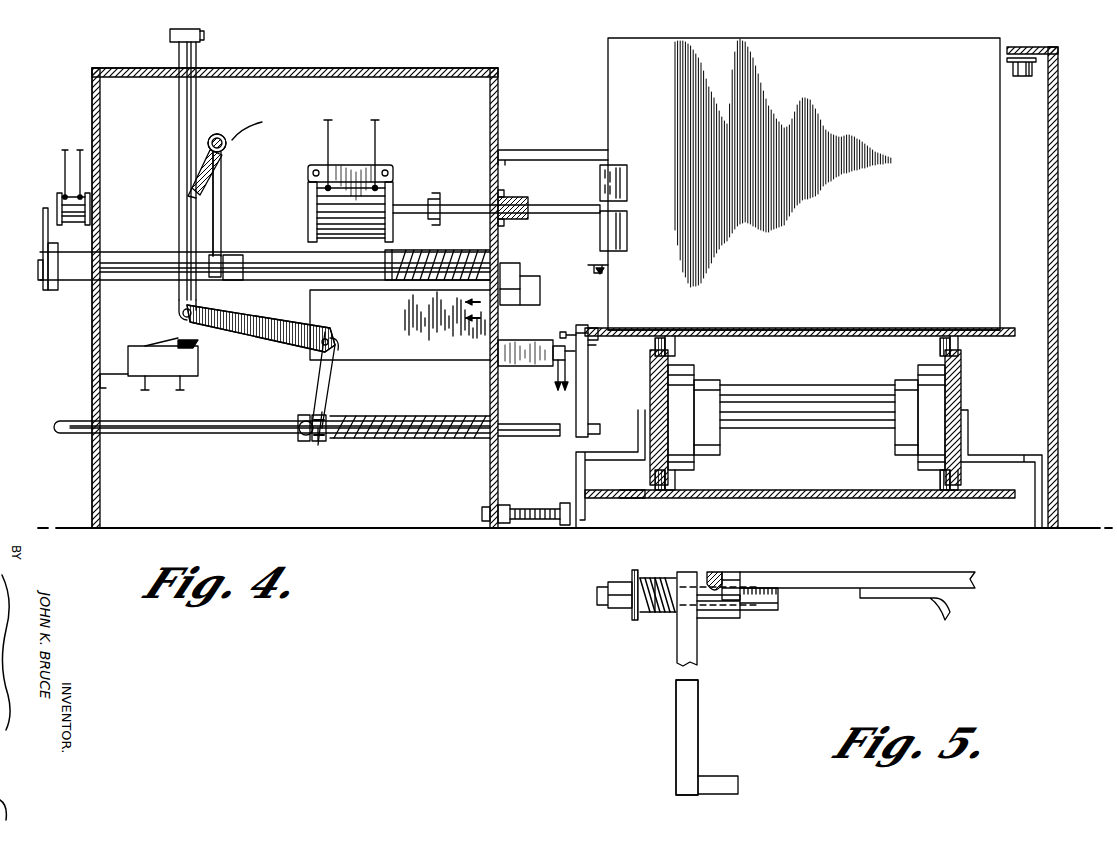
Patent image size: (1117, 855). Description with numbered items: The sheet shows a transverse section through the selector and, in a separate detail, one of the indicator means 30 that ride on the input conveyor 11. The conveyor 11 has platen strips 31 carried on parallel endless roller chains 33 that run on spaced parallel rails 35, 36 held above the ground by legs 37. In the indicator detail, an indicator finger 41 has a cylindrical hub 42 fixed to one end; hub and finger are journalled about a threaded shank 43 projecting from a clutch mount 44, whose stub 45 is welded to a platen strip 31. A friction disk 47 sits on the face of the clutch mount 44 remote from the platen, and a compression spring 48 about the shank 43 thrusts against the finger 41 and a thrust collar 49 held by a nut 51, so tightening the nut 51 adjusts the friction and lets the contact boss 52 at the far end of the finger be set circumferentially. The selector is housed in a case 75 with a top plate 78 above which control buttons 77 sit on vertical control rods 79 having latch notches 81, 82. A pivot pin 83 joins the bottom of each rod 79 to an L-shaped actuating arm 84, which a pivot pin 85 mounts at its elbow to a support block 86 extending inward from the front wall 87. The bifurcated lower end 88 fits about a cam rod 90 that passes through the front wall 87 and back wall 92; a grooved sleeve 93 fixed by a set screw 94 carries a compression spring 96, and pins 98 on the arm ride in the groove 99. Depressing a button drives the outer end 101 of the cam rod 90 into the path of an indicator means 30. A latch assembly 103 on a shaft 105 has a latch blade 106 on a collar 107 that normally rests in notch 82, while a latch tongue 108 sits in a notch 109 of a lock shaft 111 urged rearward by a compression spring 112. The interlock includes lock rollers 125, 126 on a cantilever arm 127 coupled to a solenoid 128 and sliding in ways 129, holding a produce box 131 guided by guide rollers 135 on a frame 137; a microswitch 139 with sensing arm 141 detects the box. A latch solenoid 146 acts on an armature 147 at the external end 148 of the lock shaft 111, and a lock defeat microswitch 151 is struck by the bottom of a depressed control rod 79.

In FIG. 4, the conveyor 11 is at (903, 335).
In FIG. 4, the indicator means 30 is at (588, 380).
In FIG. 5, the indicator means 30 is at (672, 706).
In FIG. 4, the platen strips 31 is at (826, 320).
In FIG. 5, the platen strips 31 is at (918, 576).
In FIG. 4, the endless roller chains 33 is at (672, 344).
In FIG. 4, the rail 35 is at (670, 454).
In FIG. 4, the rail 36 is at (965, 408).
In FIG. 4, the legs 37 is at (592, 499).
In FIG. 5, the indicator finger 41 is at (698, 704).
In FIG. 5, the cylindrical hub 42 is at (715, 622).
In FIG. 5, the threaded shank 43 is at (655, 571).
In FIG. 5, the clutch mount 44 is at (740, 623).
In FIG. 5, the stub 45 is at (775, 612).
In FIG. 5, the friction disk 47 is at (714, 573).
In FIG. 5, the compression spring 48 is at (660, 620).
In FIG. 5, the thrust collar 49 is at (630, 572).
In FIG. 5, the nut 51 is at (628, 612).
In FIG. 4, the contact boss 52 is at (594, 430).
In FIG. 5, the contact boss 52 is at (710, 776).
In FIG. 4, the case 75 is at (405, 66).
In FIG. 4, the control buttons 77 is at (203, 34).
In FIG. 4, the top plate 78 is at (345, 68).
In FIG. 4, the control rod 79 is at (195, 97).
In FIG. 4, the latch notch 81 is at (214, 132).
In FIG. 4, the latch notch 82 is at (202, 191).
In FIG. 4, the pivot pin 83 is at (181, 308).
In FIG. 4, the actuating arm 84 is at (250, 320).
In FIG. 4, the pivot pin 85 is at (345, 348).
In FIG. 4, the support block 86 is at (384, 352).
In FIG. 4, the front wall 87 is at (498, 332).
In FIG. 4, the lower end 88 is at (306, 445).
In FIG. 4, the cam rod 90 is at (205, 425).
In FIG. 4, the back wall 92 is at (92, 472).
In FIG. 4, the grooved sleeve 93 is at (318, 446).
In FIG. 4, the set screw 94 is at (328, 414).
In FIG. 4, the compression spring 96 is at (397, 440).
In FIG. 4, the pins 98 is at (308, 416).
In FIG. 4, the groove 99 is at (322, 444).
In FIG. 4, the outer end 101 is at (532, 436).
In FIG. 4, the latch assembly 103 is at (228, 175).
In FIG. 4, the shaft 105 is at (228, 134).
In FIG. 4, the latch blade 106 is at (218, 189).
In FIG. 4, the collar 107 is at (262, 122).
In FIG. 4, the latch tongue 108 is at (218, 221).
In FIG. 4, the notch 109 is at (220, 276).
In FIG. 4, the lock shaft 111 is at (360, 265).
In FIG. 4, the compression spring 112 is at (423, 253).
In FIG. 4, the lock roller 125 is at (630, 190).
In FIG. 4, the lock roller 126 is at (628, 237).
In FIG. 4, the cantilever arm 127 is at (552, 210).
In FIG. 4, the solenoid 128 is at (380, 204).
In FIG. 4, the ways 129 is at (521, 198).
In FIG. 4, the produce box 131 is at (611, 60).
In FIG. 4, the guide rollers 135 is at (1032, 74).
In FIG. 4, the frame 137 is at (1052, 124).
In FIG. 4, the microswitch 139 is at (523, 274).
In FIG. 4, the sensing arm 141 is at (599, 282).
In FIG. 4, the latch solenoid 146 is at (48, 195).
In FIG. 4, the armature 147 is at (44, 226).
In FIG. 4, the external end 148 is at (74, 284).
In FIG. 4, the lock defeat microswitch 151 is at (131, 366).